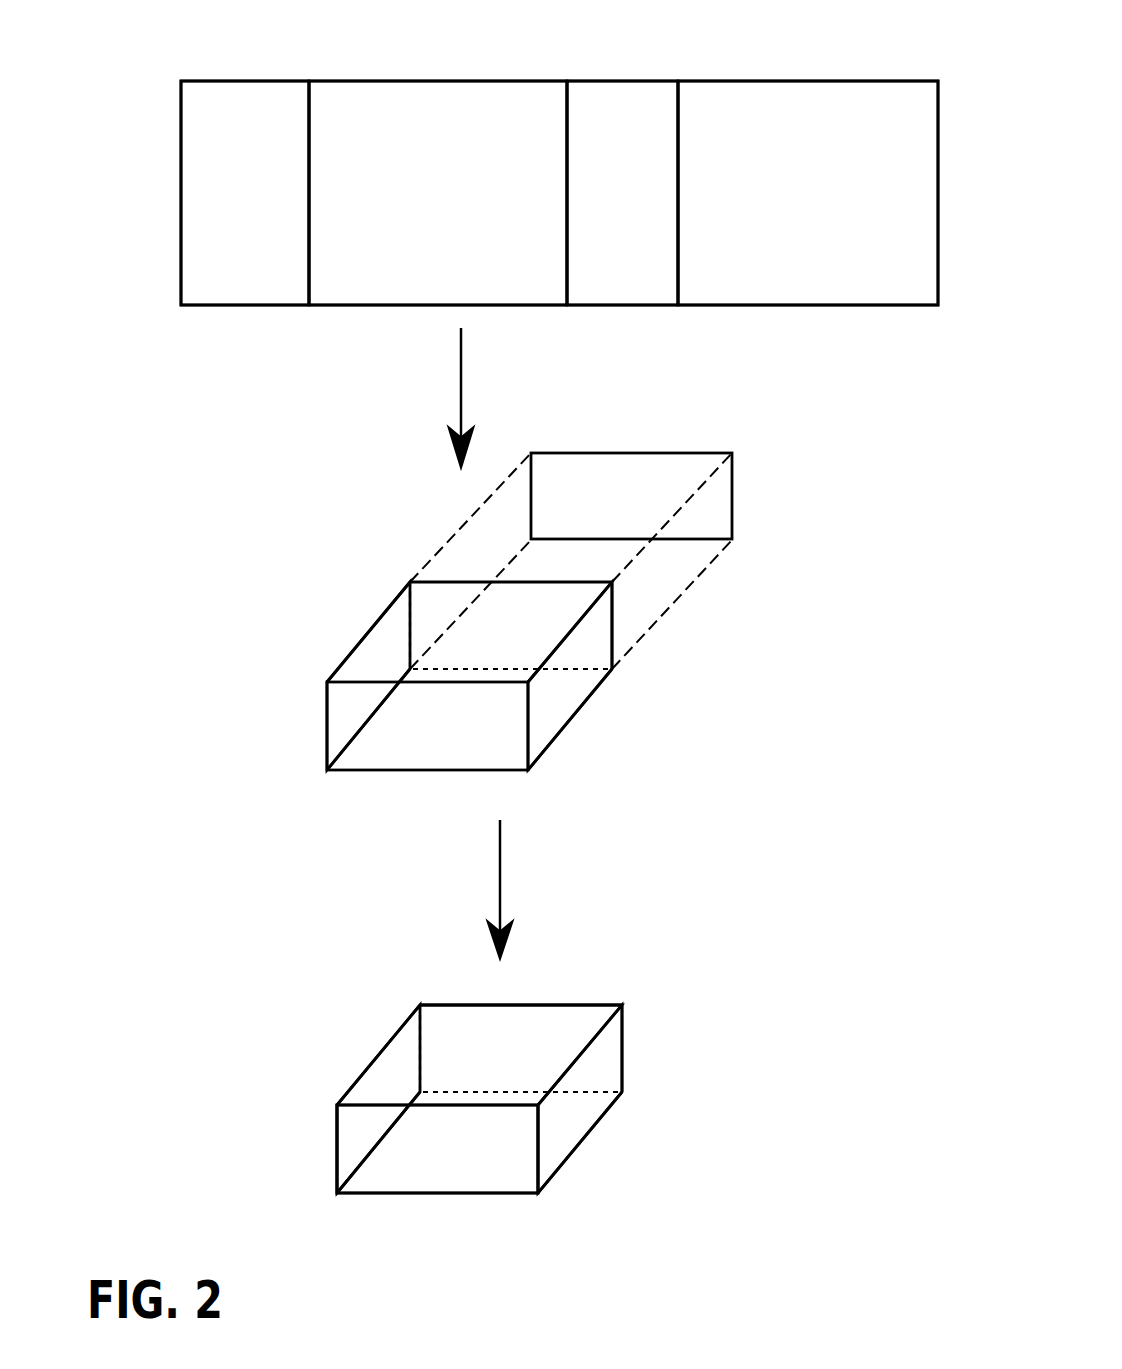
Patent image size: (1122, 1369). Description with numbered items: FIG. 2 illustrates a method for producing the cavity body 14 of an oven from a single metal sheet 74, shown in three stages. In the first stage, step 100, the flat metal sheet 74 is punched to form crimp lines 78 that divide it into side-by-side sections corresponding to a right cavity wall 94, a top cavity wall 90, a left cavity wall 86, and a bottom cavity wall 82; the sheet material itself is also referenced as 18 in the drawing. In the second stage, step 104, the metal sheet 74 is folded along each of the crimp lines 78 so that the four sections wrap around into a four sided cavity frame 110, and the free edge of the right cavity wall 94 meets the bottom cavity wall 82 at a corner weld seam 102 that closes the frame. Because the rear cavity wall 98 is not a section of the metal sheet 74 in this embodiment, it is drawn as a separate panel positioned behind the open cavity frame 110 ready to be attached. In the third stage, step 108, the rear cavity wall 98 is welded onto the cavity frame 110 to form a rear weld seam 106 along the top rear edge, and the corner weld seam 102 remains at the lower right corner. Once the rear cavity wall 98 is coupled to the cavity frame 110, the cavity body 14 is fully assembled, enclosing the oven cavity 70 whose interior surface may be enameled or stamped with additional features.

The cavity body 14 is at (645, 1018).
The blank material 18 is at (372, 248).
The oven cavity 70 is at (428, 1147).
The metal sheet 74 is at (848, 48).
The crimp lines 78 is at (309, 80).
The bottom cavity wall 82 is at (632, 637).
The left cavity wall 86 is at (502, 637).
The top cavity wall 90 is at (440, 1070).
The right cavity wall 94 is at (401, 637).
The rear cavity wall 98 is at (614, 759).
The step of punching the metal sheet 100 is at (150, 190).
The corner weld seam 102 is at (558, 733).
The step of folding the metal sheet 104 is at (248, 697).
The rear weld seam 106 is at (532, 1002).
The step of attaching the rear cavity wall 108 is at (248, 1142).
The cavity frame 110 is at (718, 622).